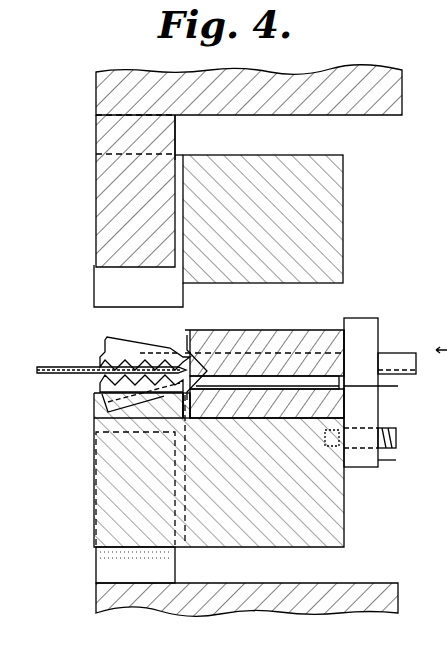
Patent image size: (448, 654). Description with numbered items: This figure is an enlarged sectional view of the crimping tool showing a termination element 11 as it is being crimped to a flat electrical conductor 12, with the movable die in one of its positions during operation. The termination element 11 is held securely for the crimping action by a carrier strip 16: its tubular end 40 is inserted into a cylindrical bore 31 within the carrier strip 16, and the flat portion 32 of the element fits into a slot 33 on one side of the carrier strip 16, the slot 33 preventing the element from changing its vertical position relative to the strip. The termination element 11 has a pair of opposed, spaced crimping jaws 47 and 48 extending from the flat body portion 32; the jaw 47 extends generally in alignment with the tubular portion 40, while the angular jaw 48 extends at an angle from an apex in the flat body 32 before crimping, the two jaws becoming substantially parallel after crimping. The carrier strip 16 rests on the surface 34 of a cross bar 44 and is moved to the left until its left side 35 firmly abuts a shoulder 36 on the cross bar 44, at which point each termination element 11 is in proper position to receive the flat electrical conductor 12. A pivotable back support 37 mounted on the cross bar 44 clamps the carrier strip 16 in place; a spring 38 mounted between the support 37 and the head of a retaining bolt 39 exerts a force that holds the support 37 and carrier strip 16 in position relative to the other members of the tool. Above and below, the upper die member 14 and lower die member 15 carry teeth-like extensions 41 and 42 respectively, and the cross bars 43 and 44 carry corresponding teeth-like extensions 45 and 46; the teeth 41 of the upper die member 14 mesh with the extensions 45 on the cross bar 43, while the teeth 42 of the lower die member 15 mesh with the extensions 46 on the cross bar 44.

The termination element 11 is at (104, 338).
The flat electrical conductor 12 is at (48, 374).
The upper die member 14 is at (96, 84).
The lower die member 15 is at (98, 600).
The carrier strip 16 is at (330, 316).
The cylindrical bore 31 is at (381, 389).
The flat portion 32 is at (185, 352).
The slot 33 is at (200, 340).
The surface 34 is at (290, 412).
The left side 35 is at (190, 410).
The shoulder 36 is at (182, 412).
The pivotable back support 37 is at (375, 322).
The spring 38 is at (380, 462).
The retaining bolt 39 is at (398, 436).
The tubular end 40 is at (255, 382).
The teeth-like extensions 41 is at (104, 213).
The teeth-like extensions 42 is at (104, 563).
The cross bar 43 is at (340, 198).
The cross bar 44 is at (102, 490).
The teeth-like extensions 45 is at (94, 292).
The teeth-like extensions 46 is at (94, 420).
The crimping jaw 47 is at (100, 383).
The angular jaw 48 is at (120, 338).